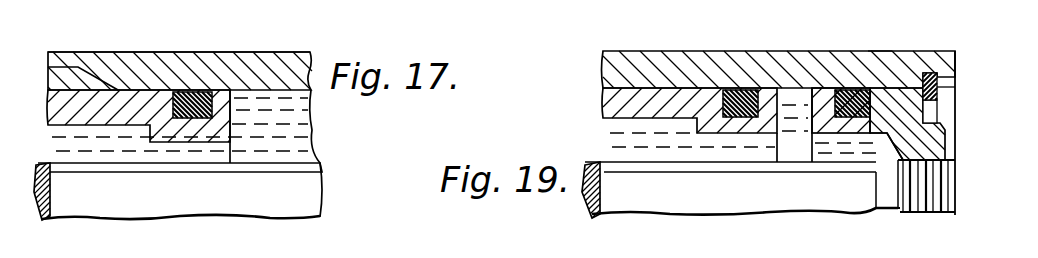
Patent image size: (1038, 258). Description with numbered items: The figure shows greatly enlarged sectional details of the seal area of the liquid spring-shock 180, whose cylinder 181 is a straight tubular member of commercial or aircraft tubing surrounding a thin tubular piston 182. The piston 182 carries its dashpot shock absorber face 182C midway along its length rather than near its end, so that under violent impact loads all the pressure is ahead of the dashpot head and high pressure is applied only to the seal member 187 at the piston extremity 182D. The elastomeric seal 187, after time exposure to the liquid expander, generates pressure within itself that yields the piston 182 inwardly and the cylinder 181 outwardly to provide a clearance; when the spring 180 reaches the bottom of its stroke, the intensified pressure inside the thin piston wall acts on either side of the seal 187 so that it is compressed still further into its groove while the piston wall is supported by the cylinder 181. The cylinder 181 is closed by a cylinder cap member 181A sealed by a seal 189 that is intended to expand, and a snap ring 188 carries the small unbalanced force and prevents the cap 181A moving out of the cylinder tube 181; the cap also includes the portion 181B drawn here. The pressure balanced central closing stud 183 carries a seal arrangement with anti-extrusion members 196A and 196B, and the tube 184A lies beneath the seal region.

In FIG. 17, the spring-shock 180 is at (82, 46).
In FIG. 19, the spring-shock 180 is at (926, 42).
In FIG. 17, the cylinder 181 is at (300, 52).
In FIG. 19, the cylinder 181 is at (855, 92).
In FIG. 19, the cylinder cap member 181A is at (913, 140).
In FIG. 19, the nut threads 181B is at (845, 133).
In FIG. 17, the piston 182 is at (52, 105).
In FIG. 19, the piston 182 is at (605, 98).
In FIG. 19, the dashpot shock absorber face 182C is at (527, 8).
In FIG. 17, the piston extremity 182D is at (312, 130).
In FIG. 19, the piston extremity 182D is at (763, 128).
In FIG. 17, the central closing stud 183 is at (38, 175).
In FIG. 19, the central closing stud 183 is at (586, 165).
In FIG. 17, the tube 184A is at (250, 168).
In FIG. 19, the tube 184A is at (673, 150).
In FIG. 17, the seal member 187 is at (195, 92).
In FIG. 19, the seal member 187 is at (740, 92).
In FIG. 19, the snap ring 188 is at (940, 78).
In FIG. 19, the seal 189 is at (878, 52).
In FIG. 17, the anti-extrusion member 196A is at (157, 5).
In FIG. 17, the anti-extrusion member 196B is at (259, 5).